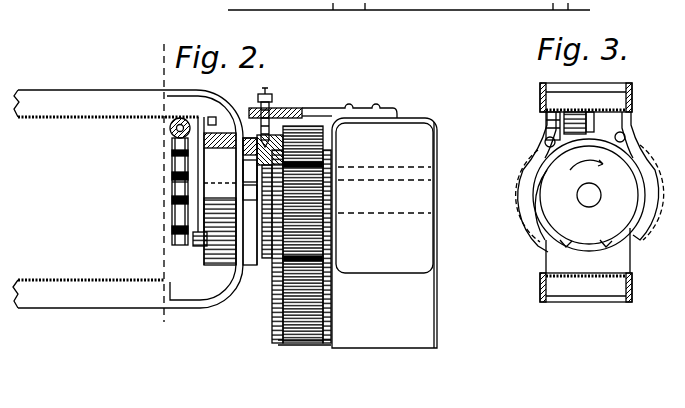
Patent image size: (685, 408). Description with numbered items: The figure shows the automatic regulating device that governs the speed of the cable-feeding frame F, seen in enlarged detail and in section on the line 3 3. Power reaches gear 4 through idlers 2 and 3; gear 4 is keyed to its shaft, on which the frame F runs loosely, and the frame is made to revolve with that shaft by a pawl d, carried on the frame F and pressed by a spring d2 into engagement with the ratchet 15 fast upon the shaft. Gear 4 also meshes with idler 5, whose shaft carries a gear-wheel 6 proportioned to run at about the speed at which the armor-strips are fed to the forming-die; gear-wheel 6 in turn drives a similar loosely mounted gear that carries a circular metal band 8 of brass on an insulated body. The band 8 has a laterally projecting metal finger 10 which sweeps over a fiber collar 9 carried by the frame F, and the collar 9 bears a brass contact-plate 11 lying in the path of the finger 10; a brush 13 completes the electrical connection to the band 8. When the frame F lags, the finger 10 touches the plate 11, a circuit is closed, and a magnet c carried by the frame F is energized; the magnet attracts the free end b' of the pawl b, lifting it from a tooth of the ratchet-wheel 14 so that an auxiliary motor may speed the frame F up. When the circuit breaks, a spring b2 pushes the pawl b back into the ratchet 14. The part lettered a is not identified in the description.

In FIG. 2, the idler 2 is at (242, 106).
In FIG. 2, the section line 3 is at (161, 178).
In FIG. 2, the gear 4 is at (328, 190).
In FIG. 2, the idler 5 is at (320, 290).
In FIG. 2, the gear-wheel 6 is at (281, 316).
In FIG. 2, the metal band 8 is at (266, 260).
In FIG. 2, the insulated collar 9 is at (255, 256).
In FIG. 2, the metal finger 10 is at (248, 179).
In FIG. 2, the contact-plate 11 is at (250, 190).
In FIG. 2, the brush 13 is at (275, 118).
In FIG. 2, the ratchet-wheel 14 is at (172, 182).
In FIG. 3, the ratchet-wheel 14 is at (586, 197).
In FIG. 2, the ratchet 15 is at (196, 246).
In FIG. 3, the ratchet 15 is at (590, 246).
In FIG. 2, the pin a is at (215, 120).
In FIG. 3, the pawl b is at (521, 196).
In FIG. 2, the free end of pawl b' is at (164, 191).
In FIG. 3, the free end of pawl b' is at (532, 126).
In FIG. 3, the spring b2 is at (526, 165).
In FIG. 2, the magnet c is at (169, 128).
In FIG. 3, the magnet c is at (591, 123).
In FIG. 2, the pawl d is at (207, 150).
In FIG. 3, the pawl d is at (647, 205).
In FIG. 3, the spring d2 is at (646, 168).
In FIG. 3, the cable-feeding frame F is at (586, 196).